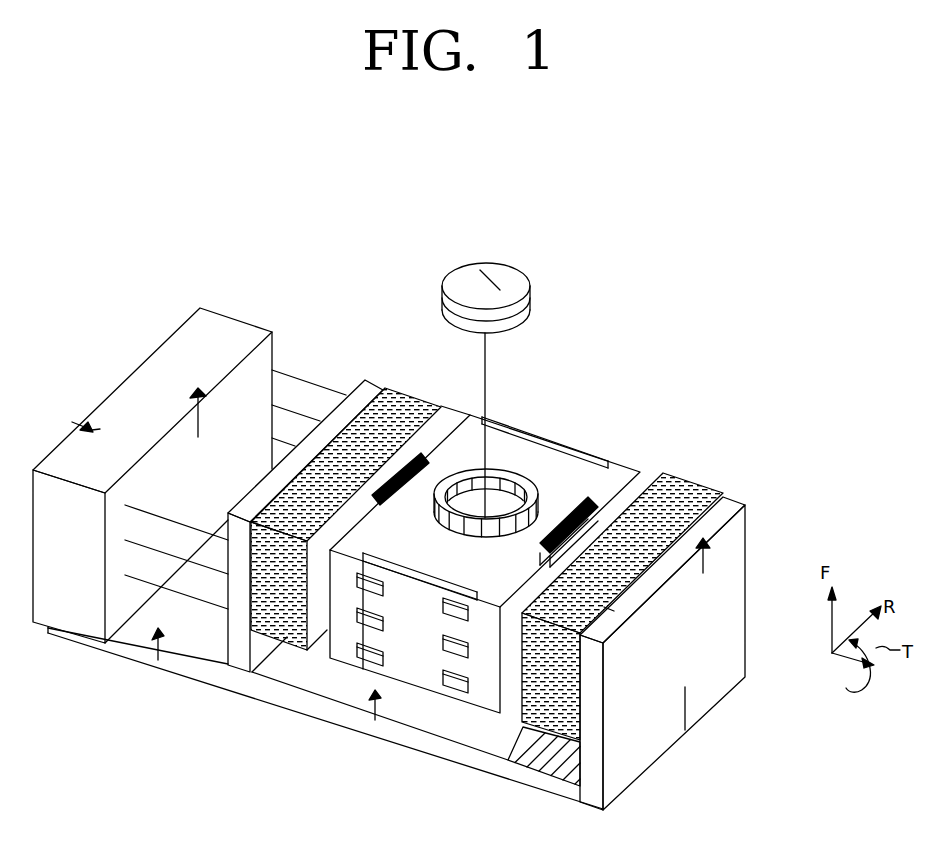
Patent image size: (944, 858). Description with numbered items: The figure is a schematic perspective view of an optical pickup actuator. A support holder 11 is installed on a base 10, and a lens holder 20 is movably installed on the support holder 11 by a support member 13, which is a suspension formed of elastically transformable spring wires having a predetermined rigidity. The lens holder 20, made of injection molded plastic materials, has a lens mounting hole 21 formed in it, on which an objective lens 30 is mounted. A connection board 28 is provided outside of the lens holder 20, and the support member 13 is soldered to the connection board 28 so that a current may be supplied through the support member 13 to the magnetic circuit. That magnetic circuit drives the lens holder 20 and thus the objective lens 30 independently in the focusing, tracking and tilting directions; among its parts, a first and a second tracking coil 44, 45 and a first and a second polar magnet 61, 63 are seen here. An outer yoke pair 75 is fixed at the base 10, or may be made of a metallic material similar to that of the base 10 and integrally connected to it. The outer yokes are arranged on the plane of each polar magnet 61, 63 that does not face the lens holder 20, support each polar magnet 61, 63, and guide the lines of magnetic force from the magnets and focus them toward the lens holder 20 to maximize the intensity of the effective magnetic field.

The base 10 is at (183, 673).
The support holder 11 is at (120, 396).
The support member 13 is at (143, 585).
The lens holder 20 is at (603, 472).
The lens mounting hole 21 is at (506, 468).
The connection board 28 is at (405, 627).
The objective lens 30 is at (464, 268).
The first tracking coil 44 is at (590, 518).
The second tracking coil 45 is at (398, 450).
The first polar magnet 61 is at (690, 488).
The second polar magnet 63 is at (407, 462).
The outer yoke pair 75 is at (313, 447).